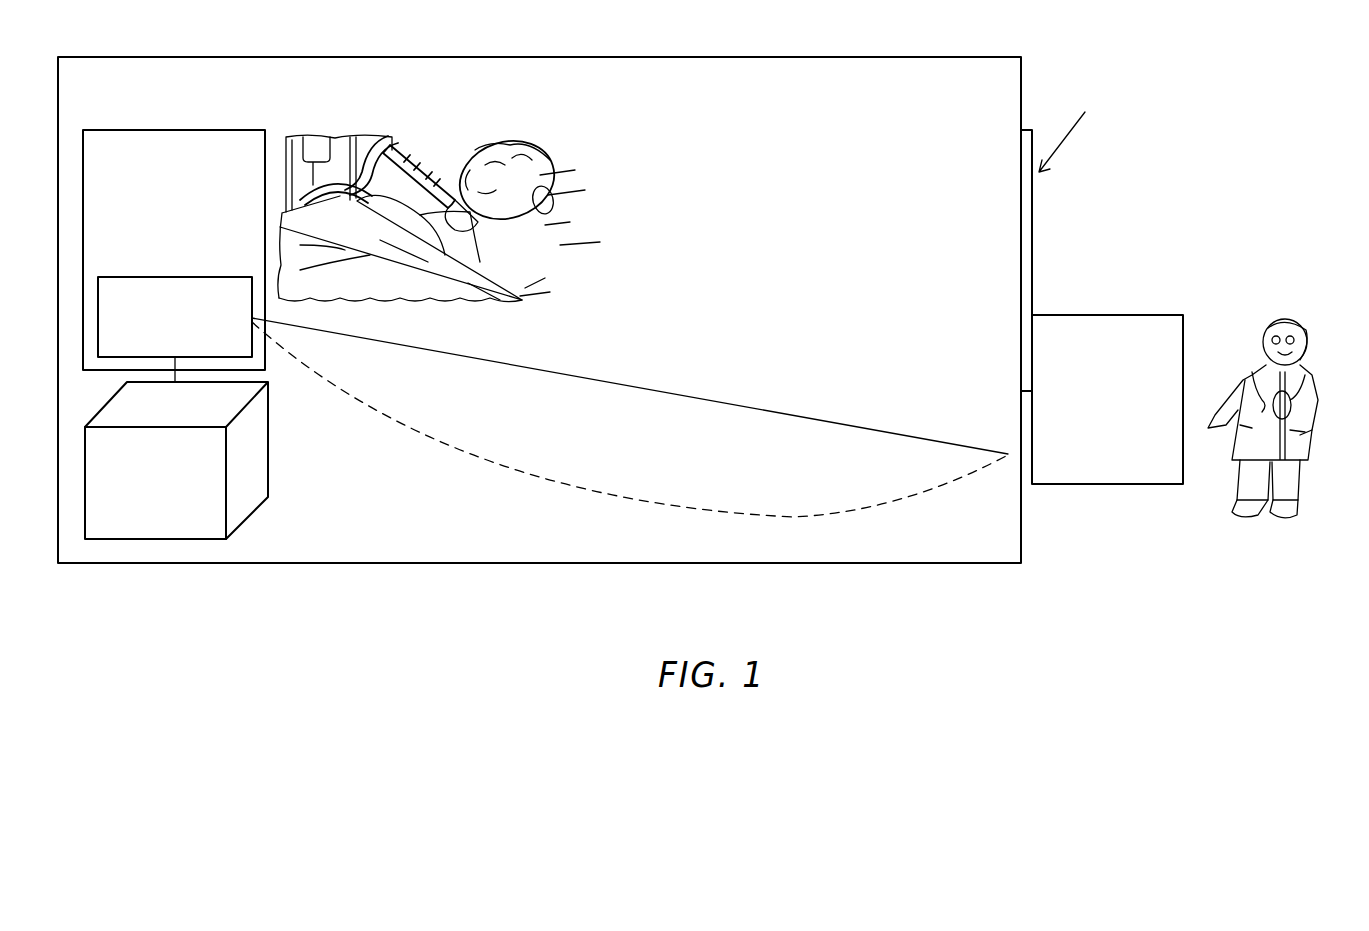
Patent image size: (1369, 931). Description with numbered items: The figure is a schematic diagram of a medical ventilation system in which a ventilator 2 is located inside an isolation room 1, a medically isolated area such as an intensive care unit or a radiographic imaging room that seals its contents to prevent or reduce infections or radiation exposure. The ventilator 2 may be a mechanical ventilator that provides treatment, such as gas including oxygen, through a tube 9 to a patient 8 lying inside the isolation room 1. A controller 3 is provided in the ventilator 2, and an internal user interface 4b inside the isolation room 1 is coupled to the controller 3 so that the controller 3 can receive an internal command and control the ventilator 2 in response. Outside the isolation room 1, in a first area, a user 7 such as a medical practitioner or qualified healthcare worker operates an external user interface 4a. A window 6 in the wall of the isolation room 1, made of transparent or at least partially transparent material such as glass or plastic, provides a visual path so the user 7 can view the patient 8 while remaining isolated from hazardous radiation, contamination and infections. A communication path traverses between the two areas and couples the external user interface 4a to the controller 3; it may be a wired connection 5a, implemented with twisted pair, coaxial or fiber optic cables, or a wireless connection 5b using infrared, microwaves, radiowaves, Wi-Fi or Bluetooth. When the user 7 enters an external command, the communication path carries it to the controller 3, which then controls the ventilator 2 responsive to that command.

The isolation room 1 is at (983, 57).
The ventilator 2 is at (126, 130).
The controller 3 is at (140, 277).
The external user interface 4a is at (1108, 314).
The internal user interface 4b is at (157, 540).
The wired connection 5a is at (890, 432).
The wireless connection 5b is at (807, 514).
The window 6 is at (1031, 238).
The user 7 is at (1313, 305).
The patient 8 is at (505, 143).
The tube 9 is at (395, 150).